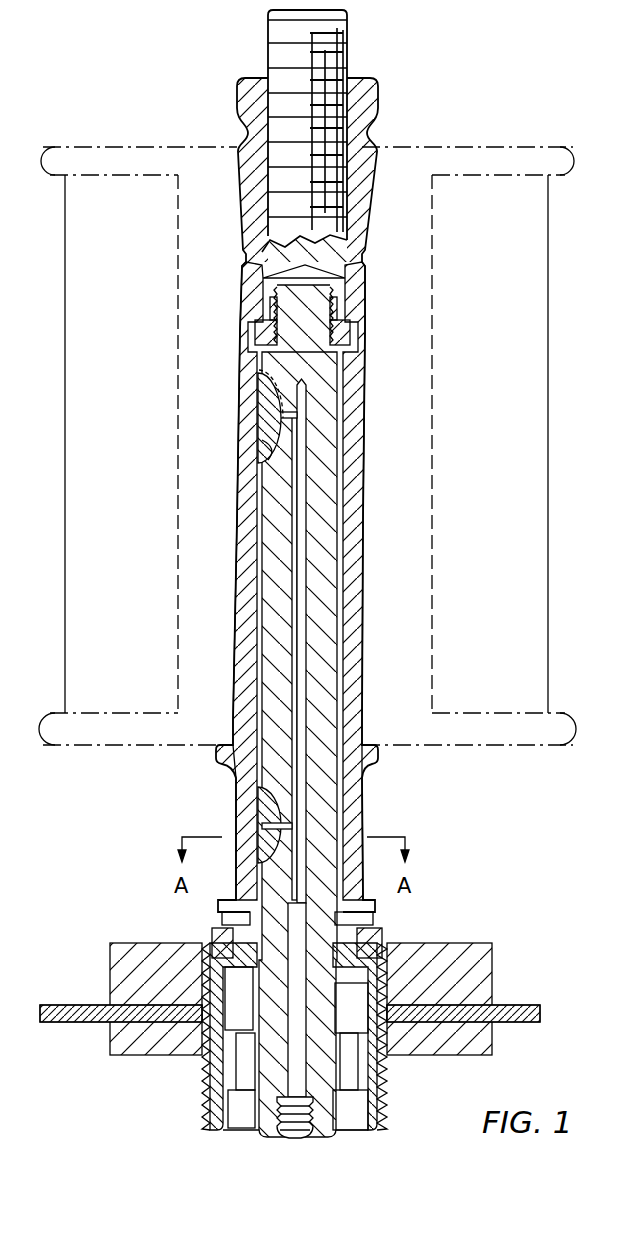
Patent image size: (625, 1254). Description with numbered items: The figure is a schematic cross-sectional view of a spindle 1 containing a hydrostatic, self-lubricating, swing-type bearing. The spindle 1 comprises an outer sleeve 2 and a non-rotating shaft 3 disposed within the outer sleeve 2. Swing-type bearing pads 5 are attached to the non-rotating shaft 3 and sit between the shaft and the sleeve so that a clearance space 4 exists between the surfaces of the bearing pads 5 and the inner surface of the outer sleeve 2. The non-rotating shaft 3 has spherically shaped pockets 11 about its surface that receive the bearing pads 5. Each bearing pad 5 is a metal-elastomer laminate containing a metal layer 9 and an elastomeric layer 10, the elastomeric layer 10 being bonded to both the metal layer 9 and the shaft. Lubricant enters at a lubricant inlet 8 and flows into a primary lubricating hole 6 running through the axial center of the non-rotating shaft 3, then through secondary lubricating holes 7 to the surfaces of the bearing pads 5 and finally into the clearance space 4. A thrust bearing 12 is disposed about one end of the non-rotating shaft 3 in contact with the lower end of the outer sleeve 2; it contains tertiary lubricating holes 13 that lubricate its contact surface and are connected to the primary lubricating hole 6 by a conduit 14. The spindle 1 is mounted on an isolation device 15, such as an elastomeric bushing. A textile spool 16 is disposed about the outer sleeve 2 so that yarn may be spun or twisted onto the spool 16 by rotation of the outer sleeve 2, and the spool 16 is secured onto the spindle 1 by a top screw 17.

The spindle 1 is at (392, 800).
The outer sleeve 2 is at (233, 793).
The non-rotating shaft 3 is at (268, 572).
The clearance space 4 is at (255, 530).
The swing-type bearing pads 5 is at (258, 432).
The primary lubricating hole 6 is at (302, 517).
The secondary lubricating holes 7 is at (262, 414).
The lubricant inlet 8 is at (287, 1130).
The metal layer 9 is at (263, 448).
The elastomeric layer 10 is at (272, 380).
The spherically shaped pockets 11 is at (217, 811).
The thrust bearing 12 is at (378, 925).
The tertiary lubricating holes 13 is at (385, 940).
The conduit 14 is at (351, 1008).
The isolation device 15 is at (220, 930).
The textile spool 16 is at (543, 148).
The top screw 17 is at (238, 92).